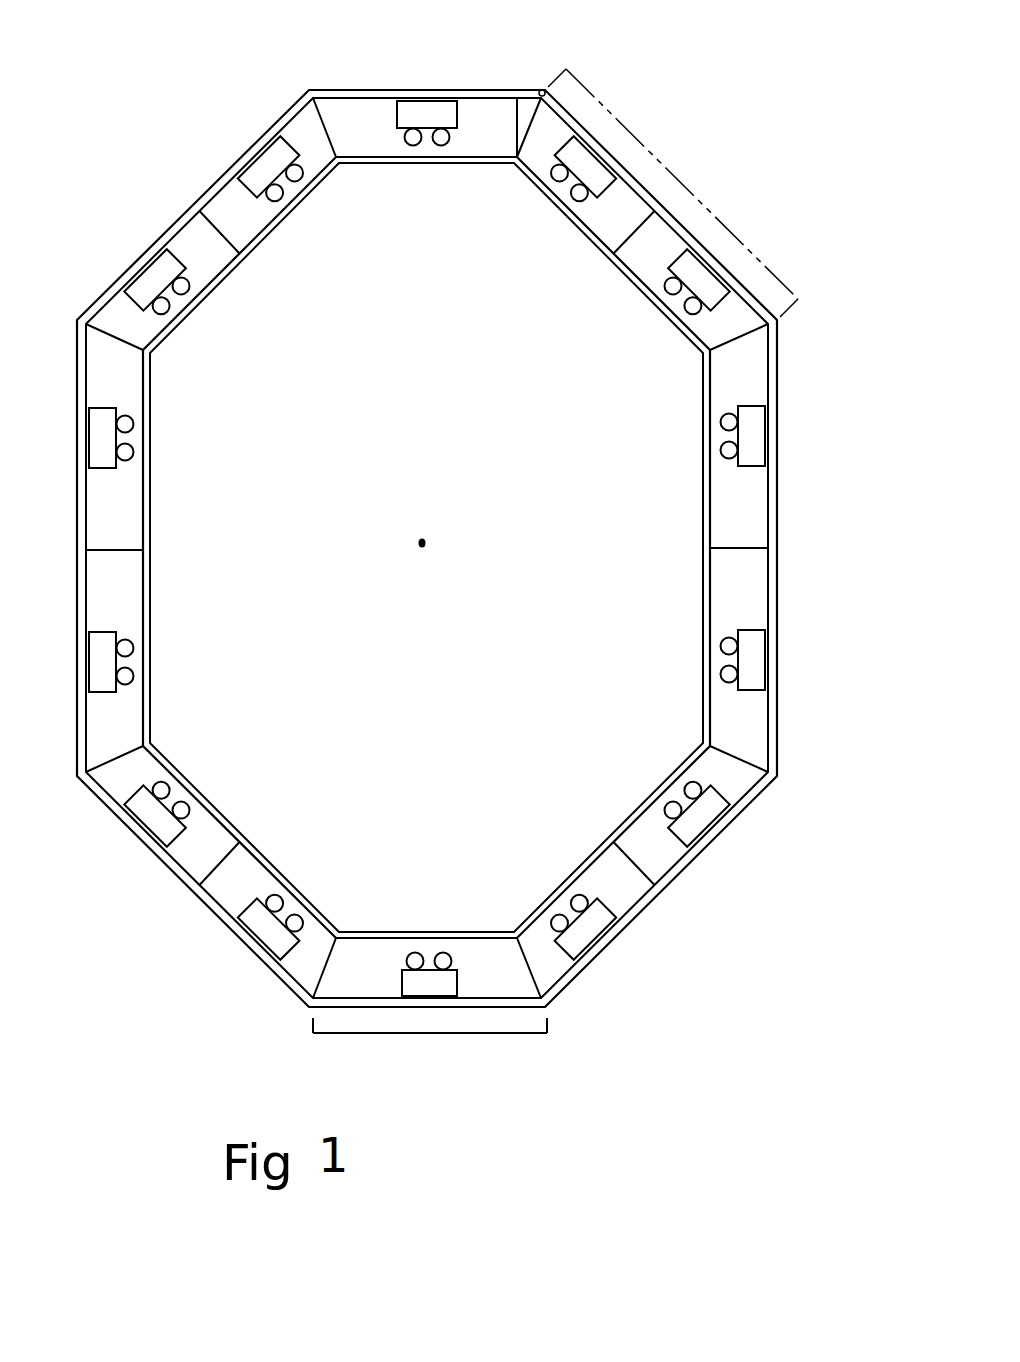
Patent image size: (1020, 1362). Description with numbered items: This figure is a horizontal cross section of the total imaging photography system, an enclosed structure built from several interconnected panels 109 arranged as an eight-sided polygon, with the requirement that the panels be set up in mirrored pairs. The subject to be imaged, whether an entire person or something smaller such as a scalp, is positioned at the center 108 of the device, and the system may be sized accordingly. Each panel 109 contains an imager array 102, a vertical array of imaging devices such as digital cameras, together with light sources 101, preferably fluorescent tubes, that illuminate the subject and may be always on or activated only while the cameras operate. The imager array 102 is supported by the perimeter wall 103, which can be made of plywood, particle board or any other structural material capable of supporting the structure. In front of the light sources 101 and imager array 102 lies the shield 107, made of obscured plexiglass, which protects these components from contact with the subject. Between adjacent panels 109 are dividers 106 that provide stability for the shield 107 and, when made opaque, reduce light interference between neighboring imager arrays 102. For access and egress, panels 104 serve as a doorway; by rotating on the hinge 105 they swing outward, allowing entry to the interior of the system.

The light sources 101 is at (418, 952).
The imager array 102 is at (461, 983).
The perimeter wall 103 is at (780, 720).
The doorway panels 104 is at (683, 180).
The hinge 105 is at (542, 88).
The dividers 106 is at (742, 548).
The shield 107 is at (150, 601).
The center 108 is at (408, 540).
The panels 109 is at (430, 1046).